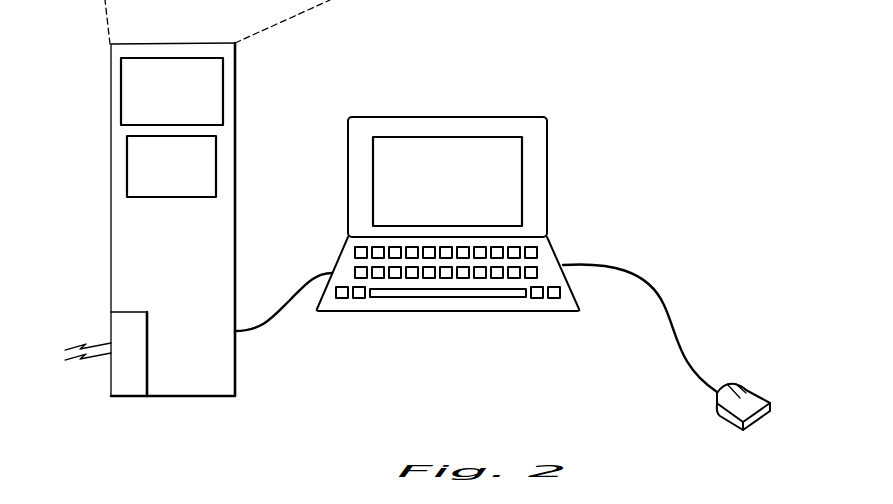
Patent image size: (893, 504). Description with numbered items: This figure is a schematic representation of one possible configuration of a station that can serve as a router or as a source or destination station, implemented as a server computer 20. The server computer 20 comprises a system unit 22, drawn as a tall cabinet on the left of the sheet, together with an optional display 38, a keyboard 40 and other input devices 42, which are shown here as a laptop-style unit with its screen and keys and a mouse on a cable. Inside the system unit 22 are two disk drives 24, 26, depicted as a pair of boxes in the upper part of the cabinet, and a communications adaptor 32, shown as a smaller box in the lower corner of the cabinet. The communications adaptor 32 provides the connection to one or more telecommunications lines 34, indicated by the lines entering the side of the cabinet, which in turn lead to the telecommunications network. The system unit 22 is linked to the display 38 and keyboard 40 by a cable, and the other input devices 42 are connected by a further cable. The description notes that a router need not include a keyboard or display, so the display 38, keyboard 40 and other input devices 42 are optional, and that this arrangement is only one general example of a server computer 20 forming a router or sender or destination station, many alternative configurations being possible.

The server computer 20 is at (327, 378).
The system unit 22 is at (111, 172).
The disk drive 24 is at (121, 91).
The disk drive 26 is at (216, 162).
The communications adaptor 32 is at (127, 388).
The telecommunications lines 34 is at (73, 354).
The display 38 is at (547, 143).
The keyboard 40 is at (445, 311).
The other input devices 42 is at (760, 393).